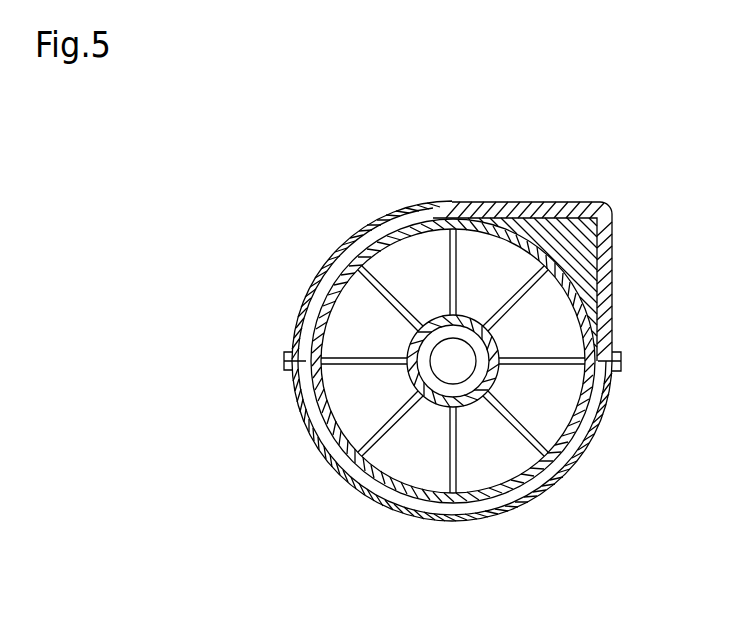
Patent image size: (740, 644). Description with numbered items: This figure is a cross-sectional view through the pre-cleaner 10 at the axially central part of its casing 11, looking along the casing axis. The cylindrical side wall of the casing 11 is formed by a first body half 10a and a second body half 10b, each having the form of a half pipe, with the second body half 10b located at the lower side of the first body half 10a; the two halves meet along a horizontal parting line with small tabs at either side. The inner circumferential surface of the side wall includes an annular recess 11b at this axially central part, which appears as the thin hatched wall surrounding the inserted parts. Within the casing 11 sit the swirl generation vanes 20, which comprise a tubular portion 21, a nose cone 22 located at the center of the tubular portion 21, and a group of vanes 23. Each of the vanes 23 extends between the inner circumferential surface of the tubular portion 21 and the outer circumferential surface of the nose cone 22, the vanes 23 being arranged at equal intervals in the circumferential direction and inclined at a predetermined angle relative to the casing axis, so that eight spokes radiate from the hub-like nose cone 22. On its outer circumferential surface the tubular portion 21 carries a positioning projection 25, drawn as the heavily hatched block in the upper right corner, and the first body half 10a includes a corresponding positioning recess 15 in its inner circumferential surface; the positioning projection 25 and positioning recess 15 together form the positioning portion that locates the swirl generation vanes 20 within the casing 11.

The pre-cleaner 10 is at (207, 333).
The first body half 10a is at (284, 342).
The second body half 10b is at (282, 380).
The casing 11 is at (348, 227).
The annular recess 11b is at (431, 210).
The positioning recess 15 is at (606, 288).
The swirl generation vanes 20 is at (370, 483).
The tubular portion 21 is at (342, 449).
The nose cone 22 is at (500, 338).
The vanes 23 is at (510, 458).
The positioning projection 25 is at (540, 218).